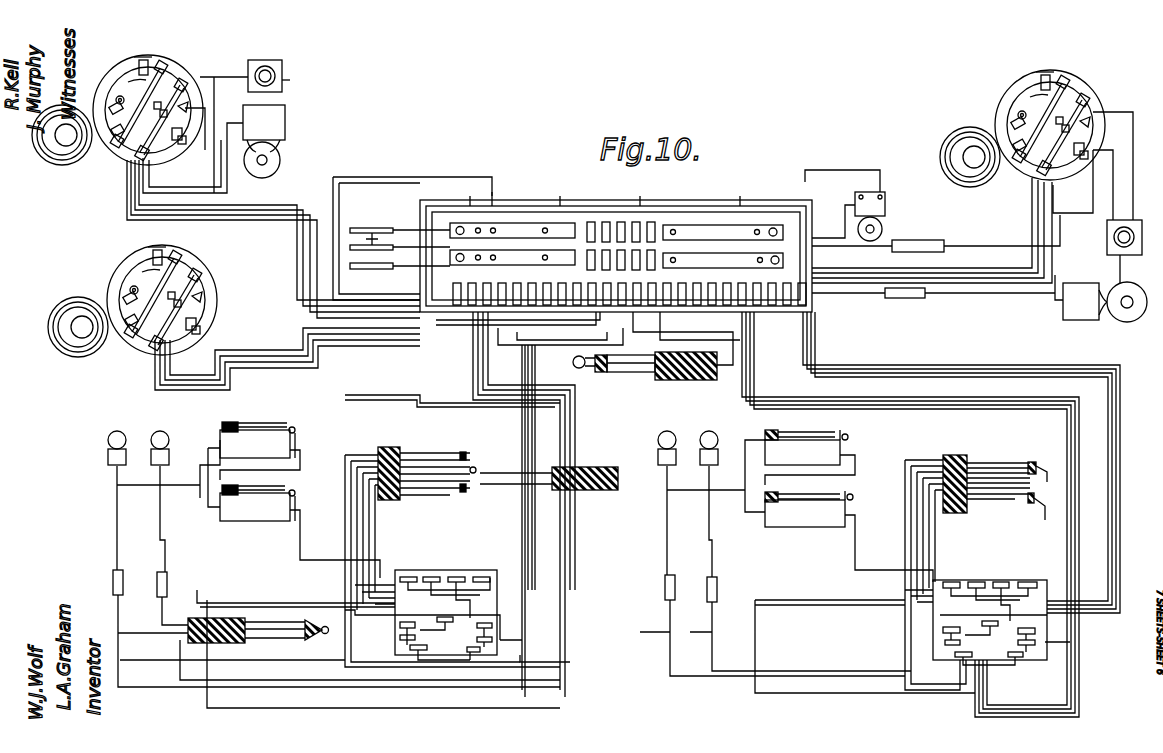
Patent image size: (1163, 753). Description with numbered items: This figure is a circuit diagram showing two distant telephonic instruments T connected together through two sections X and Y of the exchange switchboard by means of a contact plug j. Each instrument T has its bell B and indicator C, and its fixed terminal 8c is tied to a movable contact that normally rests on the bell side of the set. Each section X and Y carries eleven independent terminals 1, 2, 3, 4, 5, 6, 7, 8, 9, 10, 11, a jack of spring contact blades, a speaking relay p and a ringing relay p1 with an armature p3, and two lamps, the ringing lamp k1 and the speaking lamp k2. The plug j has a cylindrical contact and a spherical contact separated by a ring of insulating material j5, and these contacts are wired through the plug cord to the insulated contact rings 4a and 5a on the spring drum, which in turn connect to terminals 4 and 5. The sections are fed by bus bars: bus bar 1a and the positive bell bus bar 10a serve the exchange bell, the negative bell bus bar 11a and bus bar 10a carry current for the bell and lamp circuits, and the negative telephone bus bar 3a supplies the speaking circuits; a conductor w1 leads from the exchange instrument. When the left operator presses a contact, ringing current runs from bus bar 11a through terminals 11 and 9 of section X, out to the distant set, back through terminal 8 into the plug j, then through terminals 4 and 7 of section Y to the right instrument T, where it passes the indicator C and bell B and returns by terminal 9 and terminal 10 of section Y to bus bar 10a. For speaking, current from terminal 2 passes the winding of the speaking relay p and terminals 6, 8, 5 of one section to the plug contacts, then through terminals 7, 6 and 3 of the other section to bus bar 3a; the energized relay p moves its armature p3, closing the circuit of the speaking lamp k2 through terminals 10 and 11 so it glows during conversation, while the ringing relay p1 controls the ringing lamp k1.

The telephonic instrument T is at (147, 103).
The fixed terminal 8c is at (75, 103).
The indicator C is at (275, 72).
The telephone bell B is at (275, 115).
The positive bell bus bar 10a is at (510, 222).
The negative bell bus bar 11a is at (512, 249).
The bus bar 1a is at (723, 229).
The negative telephone bus bar 3a is at (723, 257).
The conductor w1 is at (400, 211).
The contact plug j is at (645, 366).
The ring of insulating material j5 is at (258, 630).
The section X is at (379, 462).
The section Y is at (955, 468).
The speaking relay p is at (257, 503).
The ringing relay p1 is at (257, 440).
The armature p3 is at (296, 432).
The ringing lamp k1 is at (160, 448).
The speaking lamp k2 is at (117, 448).
The insulated contact ring 4a is at (118, 582).
The insulated contact ring 5a is at (162, 584).
The terminal 1 is at (445, 619).
The terminal 2 is at (408, 579).
The terminal 3 is at (431, 579).
The terminal 4 is at (484, 639).
The terminal 5 is at (473, 649).
The terminal 6 is at (407, 625).
The terminal 7 is at (407, 637).
The terminal 8 is at (418, 647).
The terminal 9 is at (484, 625).
The terminal 10 is at (456, 579).
The terminal 11 is at (481, 579).